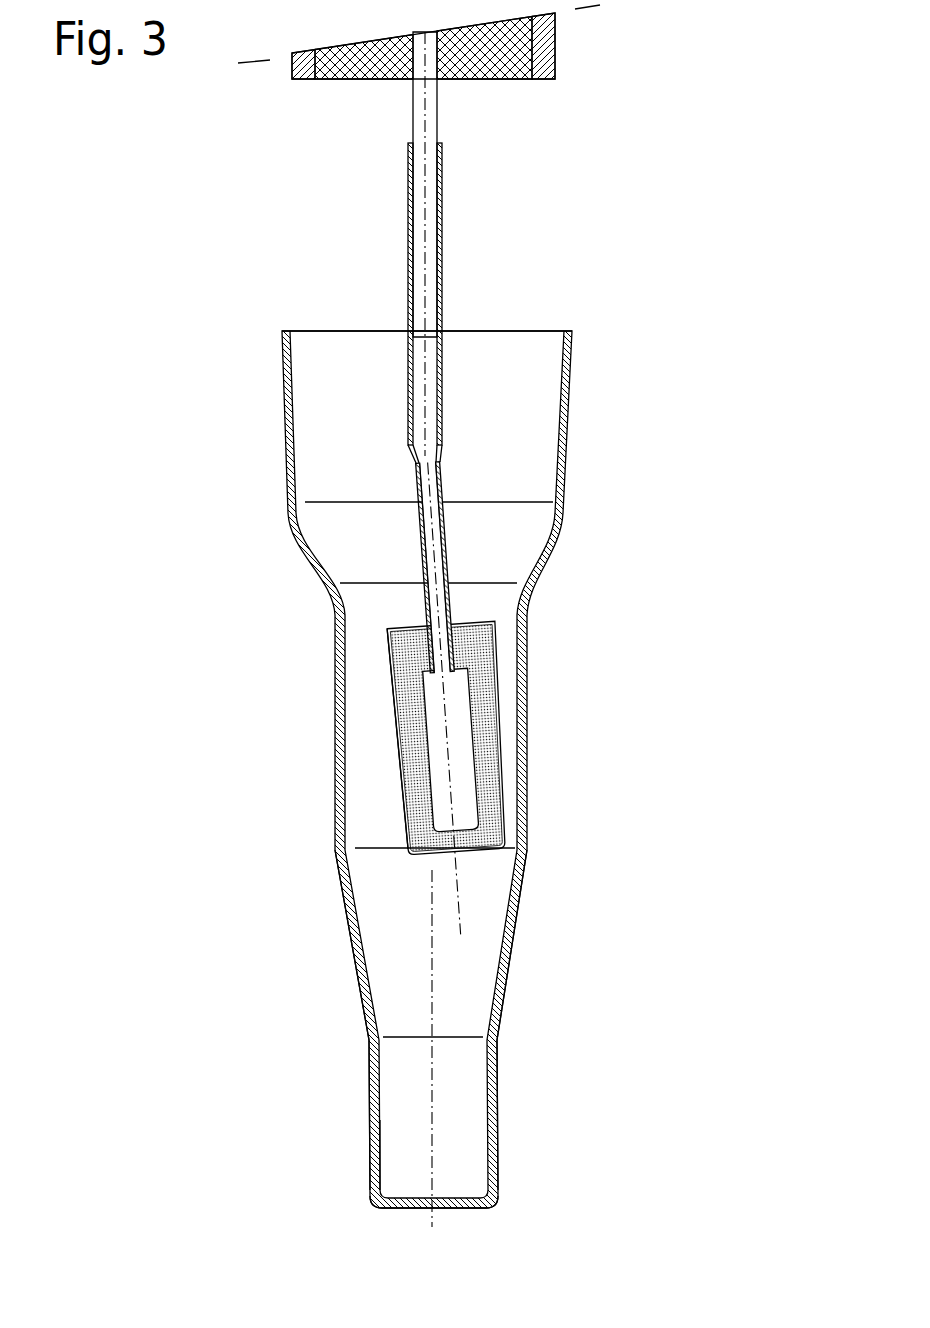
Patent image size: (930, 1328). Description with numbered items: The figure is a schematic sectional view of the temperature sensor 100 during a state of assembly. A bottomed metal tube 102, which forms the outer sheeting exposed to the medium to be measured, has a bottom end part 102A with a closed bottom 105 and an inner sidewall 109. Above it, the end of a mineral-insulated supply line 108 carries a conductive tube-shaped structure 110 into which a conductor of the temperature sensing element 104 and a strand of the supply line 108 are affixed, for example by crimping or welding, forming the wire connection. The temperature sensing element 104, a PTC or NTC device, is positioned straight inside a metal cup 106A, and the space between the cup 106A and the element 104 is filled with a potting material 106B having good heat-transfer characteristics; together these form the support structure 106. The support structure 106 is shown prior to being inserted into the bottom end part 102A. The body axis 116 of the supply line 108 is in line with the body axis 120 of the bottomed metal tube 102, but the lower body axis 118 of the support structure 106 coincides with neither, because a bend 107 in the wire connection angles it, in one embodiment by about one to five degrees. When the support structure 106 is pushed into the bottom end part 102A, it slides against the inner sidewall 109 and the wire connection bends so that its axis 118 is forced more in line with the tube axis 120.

The sample collection device 100 is at (442, 625).
The bottomed metal tube 102 is at (337, 722).
The bottom end part 102A is at (370, 1108).
The temperature sensing element 104 is at (465, 792).
The closed bottom 105 is at (455, 1206).
The support structure 106 is at (430, 715).
The metal cup 106A is at (499, 684).
The potting material 106B is at (405, 790).
The bend 107 is at (438, 452).
The mineral-insulated supply line 108 is at (580, 84).
The inner sidewall 109 is at (380, 1140).
The conductive tube-shaped structure 110 is at (442, 388).
The body axis 116 is at (426, 115).
The lower body axis 118 is at (462, 876).
The body axis 120 is at (437, 1128).